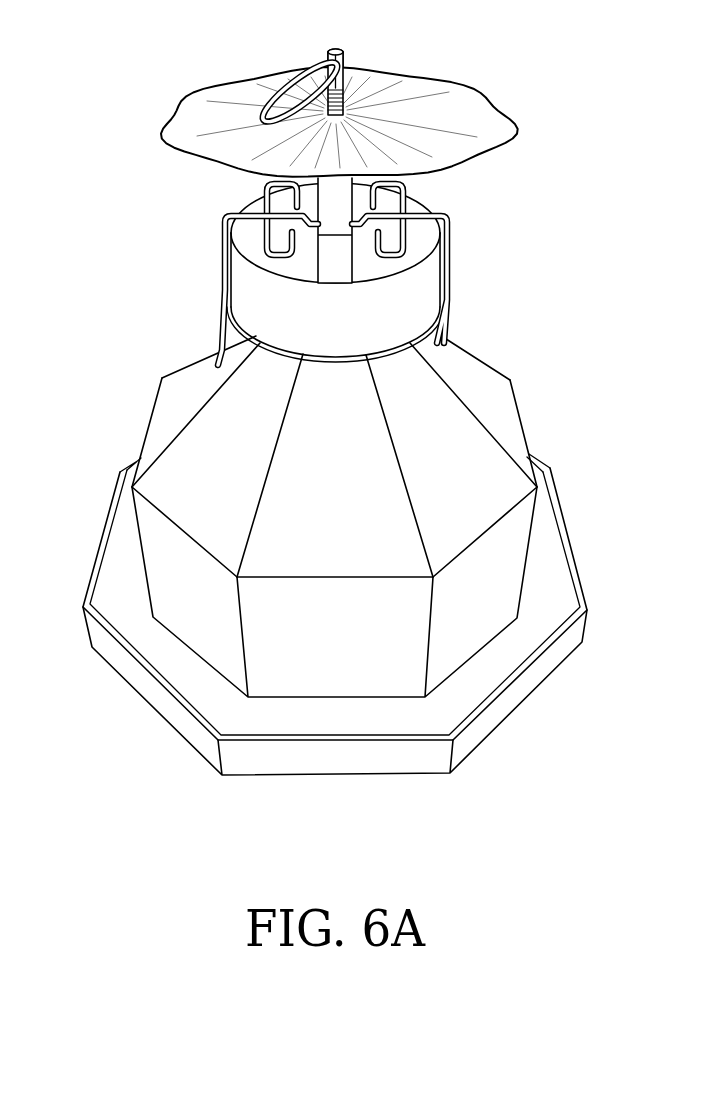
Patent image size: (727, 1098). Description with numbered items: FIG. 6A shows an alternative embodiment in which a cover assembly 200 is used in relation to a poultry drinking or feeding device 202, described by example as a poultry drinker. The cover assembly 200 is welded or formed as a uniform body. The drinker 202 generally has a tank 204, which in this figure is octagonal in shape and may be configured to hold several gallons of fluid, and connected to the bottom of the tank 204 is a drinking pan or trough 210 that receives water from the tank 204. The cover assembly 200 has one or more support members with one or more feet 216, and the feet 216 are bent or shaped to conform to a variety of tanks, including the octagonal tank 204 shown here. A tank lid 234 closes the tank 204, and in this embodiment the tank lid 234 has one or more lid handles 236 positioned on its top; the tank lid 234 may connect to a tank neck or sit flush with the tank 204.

The cover assembly 200 is at (191, 70).
The poultry drinking or feeding device 202 is at (279, 516).
The tank 204 is at (222, 520).
The drinking pan or trough 210 is at (515, 656).
The feet 216 is at (212, 358).
The tank lid 234 is at (375, 300).
The lid handles 236 is at (333, 267).